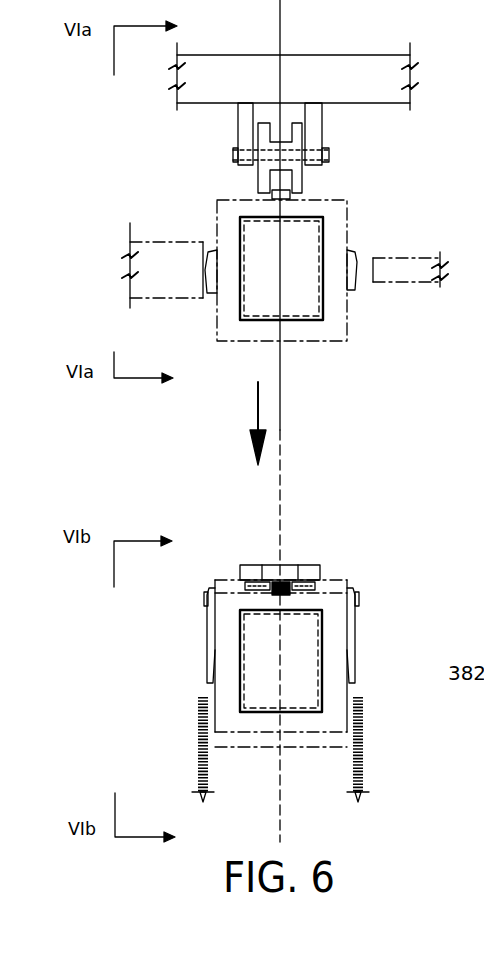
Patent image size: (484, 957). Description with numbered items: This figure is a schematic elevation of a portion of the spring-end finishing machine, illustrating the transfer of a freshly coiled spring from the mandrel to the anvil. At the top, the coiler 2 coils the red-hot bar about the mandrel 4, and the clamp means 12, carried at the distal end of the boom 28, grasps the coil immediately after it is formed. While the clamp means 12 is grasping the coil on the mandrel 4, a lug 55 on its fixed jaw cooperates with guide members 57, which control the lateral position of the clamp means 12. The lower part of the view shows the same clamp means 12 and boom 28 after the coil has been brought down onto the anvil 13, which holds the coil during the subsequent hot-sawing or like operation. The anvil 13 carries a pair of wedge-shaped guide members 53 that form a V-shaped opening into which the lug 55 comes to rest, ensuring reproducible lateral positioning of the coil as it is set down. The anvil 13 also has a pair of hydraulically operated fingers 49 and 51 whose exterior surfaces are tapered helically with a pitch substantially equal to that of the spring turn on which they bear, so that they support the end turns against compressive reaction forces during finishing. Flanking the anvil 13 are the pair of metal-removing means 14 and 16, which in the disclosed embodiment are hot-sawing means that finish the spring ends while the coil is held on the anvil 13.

The coiler 2 is at (322, 55).
The mandrel 4 is at (398, 258).
The clamp means 12 is at (347, 217).
The anvil 13 is at (343, 580).
The metal-removing means 14 is at (367, 747).
The metal-removing means 16 is at (200, 747).
The boom 28 is at (270, 290).
The finger 49 is at (208, 613).
The finger 51 is at (355, 610).
The guide members 53 is at (252, 582).
The lug 55 is at (272, 192).
The guide members 57 is at (302, 185).